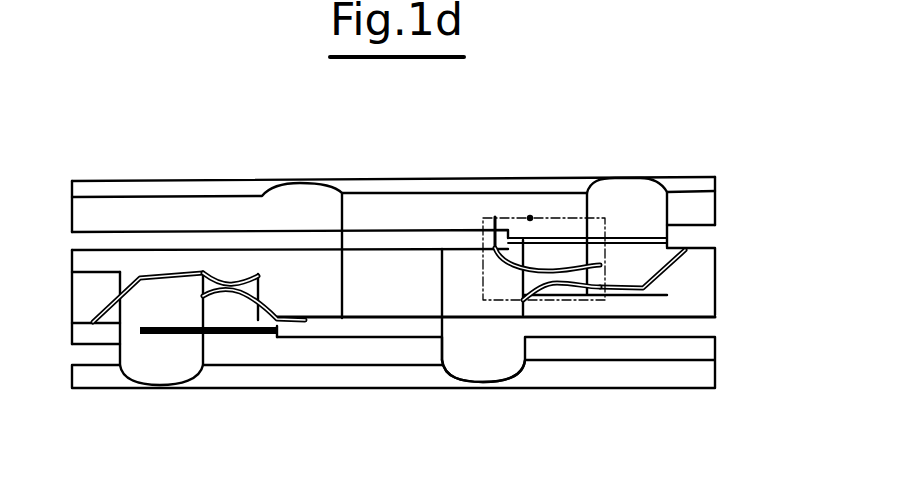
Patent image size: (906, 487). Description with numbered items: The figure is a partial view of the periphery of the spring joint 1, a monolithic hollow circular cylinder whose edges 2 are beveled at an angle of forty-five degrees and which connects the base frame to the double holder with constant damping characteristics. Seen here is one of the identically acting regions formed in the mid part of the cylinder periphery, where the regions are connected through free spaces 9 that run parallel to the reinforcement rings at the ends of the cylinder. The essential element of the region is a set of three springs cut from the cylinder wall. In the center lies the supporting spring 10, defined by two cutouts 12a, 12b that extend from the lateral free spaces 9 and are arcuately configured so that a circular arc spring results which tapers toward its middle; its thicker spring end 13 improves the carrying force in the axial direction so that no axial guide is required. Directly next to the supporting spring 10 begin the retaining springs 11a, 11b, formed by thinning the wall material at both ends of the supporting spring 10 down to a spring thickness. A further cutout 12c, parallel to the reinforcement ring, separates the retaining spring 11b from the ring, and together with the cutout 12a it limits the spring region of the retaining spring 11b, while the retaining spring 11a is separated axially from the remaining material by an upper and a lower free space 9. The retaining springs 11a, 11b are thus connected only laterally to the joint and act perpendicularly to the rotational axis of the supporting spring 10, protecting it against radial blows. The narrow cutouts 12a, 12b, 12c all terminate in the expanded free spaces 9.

The spring joint 1 is at (510, 378).
The edges 2 is at (713, 178).
The free spaces 9 is at (80, 240).
The supporting spring 10 is at (235, 300).
The retaining spring 11a is at (660, 195).
The retaining spring 11b is at (147, 307).
The cutout 12a is at (158, 275).
The cutout 12b is at (288, 262).
The cutout 12c is at (650, 257).
The spring end 13 is at (495, 217).